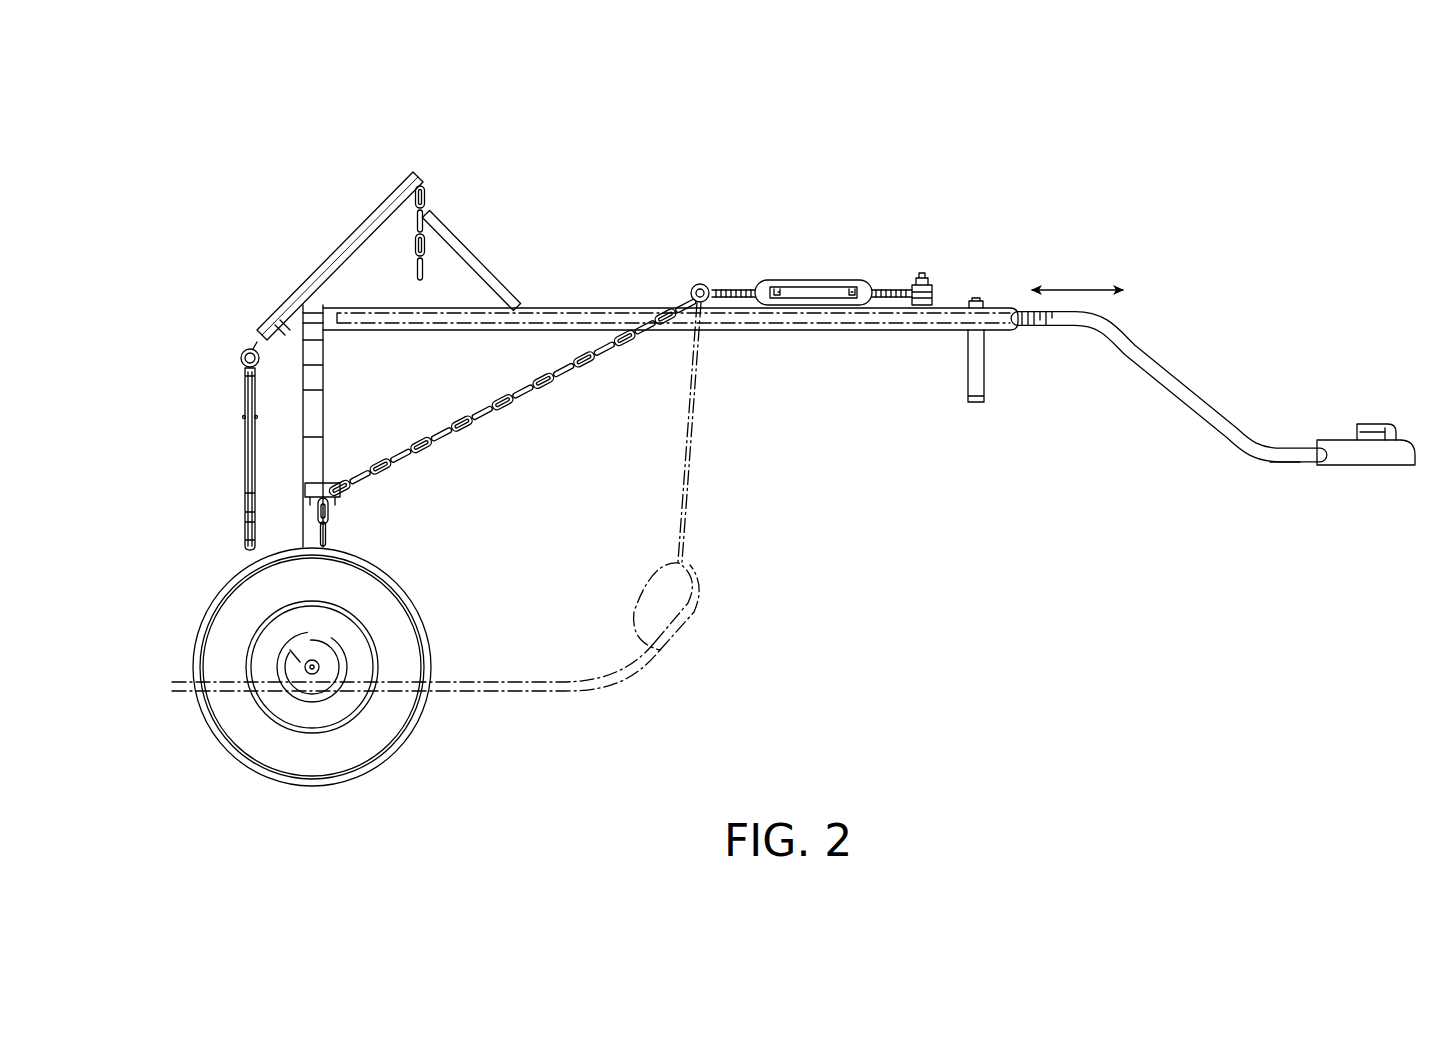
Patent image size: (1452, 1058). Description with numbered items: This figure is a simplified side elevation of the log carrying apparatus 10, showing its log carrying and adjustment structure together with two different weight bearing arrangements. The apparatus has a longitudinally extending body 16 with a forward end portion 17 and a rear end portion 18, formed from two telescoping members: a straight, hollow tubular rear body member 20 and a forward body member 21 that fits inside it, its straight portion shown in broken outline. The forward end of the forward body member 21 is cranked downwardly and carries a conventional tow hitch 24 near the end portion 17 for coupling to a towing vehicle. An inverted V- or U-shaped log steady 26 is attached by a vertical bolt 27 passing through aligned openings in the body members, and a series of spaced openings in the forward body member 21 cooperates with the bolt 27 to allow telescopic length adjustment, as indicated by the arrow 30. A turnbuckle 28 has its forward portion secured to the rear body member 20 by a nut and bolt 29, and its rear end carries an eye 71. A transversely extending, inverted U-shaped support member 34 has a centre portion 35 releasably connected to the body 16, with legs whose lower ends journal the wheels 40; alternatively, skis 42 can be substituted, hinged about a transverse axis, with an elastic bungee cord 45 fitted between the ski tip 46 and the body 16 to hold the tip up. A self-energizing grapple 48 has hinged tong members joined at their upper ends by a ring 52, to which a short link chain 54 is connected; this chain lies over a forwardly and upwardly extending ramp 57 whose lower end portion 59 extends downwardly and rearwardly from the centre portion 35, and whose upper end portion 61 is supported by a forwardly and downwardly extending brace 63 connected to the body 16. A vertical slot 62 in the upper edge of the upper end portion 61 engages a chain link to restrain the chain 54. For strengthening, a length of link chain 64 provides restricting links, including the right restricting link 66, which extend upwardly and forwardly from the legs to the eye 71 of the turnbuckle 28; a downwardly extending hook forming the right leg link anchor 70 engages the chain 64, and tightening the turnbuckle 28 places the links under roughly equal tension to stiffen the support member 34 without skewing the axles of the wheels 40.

The apparatus 10 is at (784, 457).
The body 16 is at (745, 224).
The forward end portion 17 is at (1298, 465).
The rear end portion 18 is at (572, 307).
The rear body member 20 is at (670, 312).
The forward body member 21 is at (1200, 380).
The tow hitch 24 is at (1387, 460).
The log steady 26 is at (985, 380).
The vertical bolt 27 is at (978, 297).
The turnbuckle 28 is at (811, 270).
The nut and bolt 29 is at (923, 276).
The arrow 30 is at (1078, 287).
The support member 34 is at (338, 427).
The centre portion 35 is at (326, 326).
The wheels 40 is at (397, 620).
The skis 42 is at (545, 695).
The elastic bungee cord 45 is at (687, 468).
The ski tip 46 is at (682, 618).
The self-energizing grapple 48 is at (228, 462).
The ring 52 is at (246, 349).
The link chain 54 is at (428, 230).
The ramp 57 is at (317, 234).
The lower end portion 59 is at (284, 318).
The upper end portion 61 is at (340, 234).
The vertical slot 62 is at (400, 184).
The brace 63 is at (478, 273).
The link chain 64 is at (513, 397).
The right restricting link 66 is at (578, 372).
The right leg link anchor 70 is at (336, 512).
The eye 71 is at (700, 284).